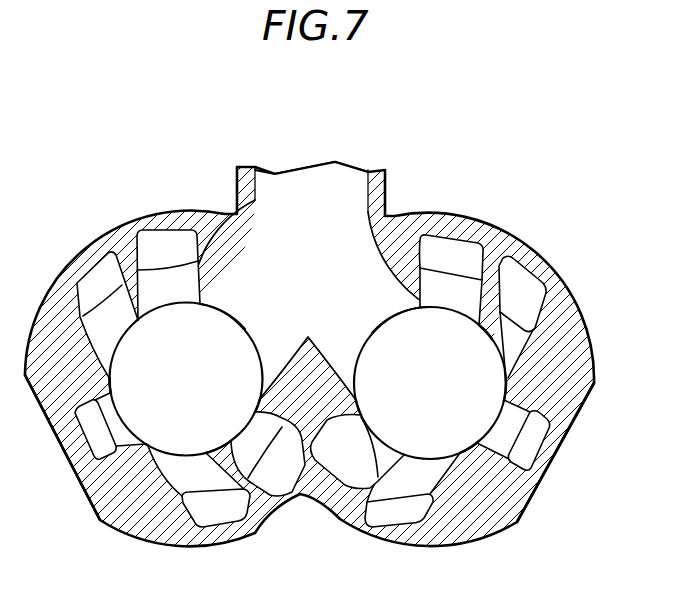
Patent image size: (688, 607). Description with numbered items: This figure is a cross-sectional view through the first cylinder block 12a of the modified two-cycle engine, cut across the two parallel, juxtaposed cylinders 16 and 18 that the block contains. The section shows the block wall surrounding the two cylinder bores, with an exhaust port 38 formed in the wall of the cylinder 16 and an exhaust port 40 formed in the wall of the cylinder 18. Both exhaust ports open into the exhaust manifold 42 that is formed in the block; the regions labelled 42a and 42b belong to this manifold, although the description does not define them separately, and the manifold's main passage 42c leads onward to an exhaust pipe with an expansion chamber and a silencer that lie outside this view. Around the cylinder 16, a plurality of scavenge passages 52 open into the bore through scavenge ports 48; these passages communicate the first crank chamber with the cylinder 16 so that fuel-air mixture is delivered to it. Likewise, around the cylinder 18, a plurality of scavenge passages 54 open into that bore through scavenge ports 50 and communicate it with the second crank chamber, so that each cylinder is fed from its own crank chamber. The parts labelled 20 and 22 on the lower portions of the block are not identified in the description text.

The first cylinder block 12a is at (73, 263).
The cylinder 16 is at (110, 380).
The cylinder 18 is at (503, 388).
The first housing section 20 is at (92, 480).
The second housing section 22 is at (488, 407).
The exhaust port 38 is at (238, 320).
The exhaust port 40 is at (386, 320).
The exhaust manifold 42 is at (262, 200).
The first port wall 42a is at (248, 243).
The second port wall 42b is at (378, 253).
The main passage 42c is at (367, 181).
The scavenge ports 48 is at (125, 338).
The scavenge ports 50 is at (430, 457).
The scavenge passages 52 is at (105, 263).
The scavenge passages 54 is at (442, 242).